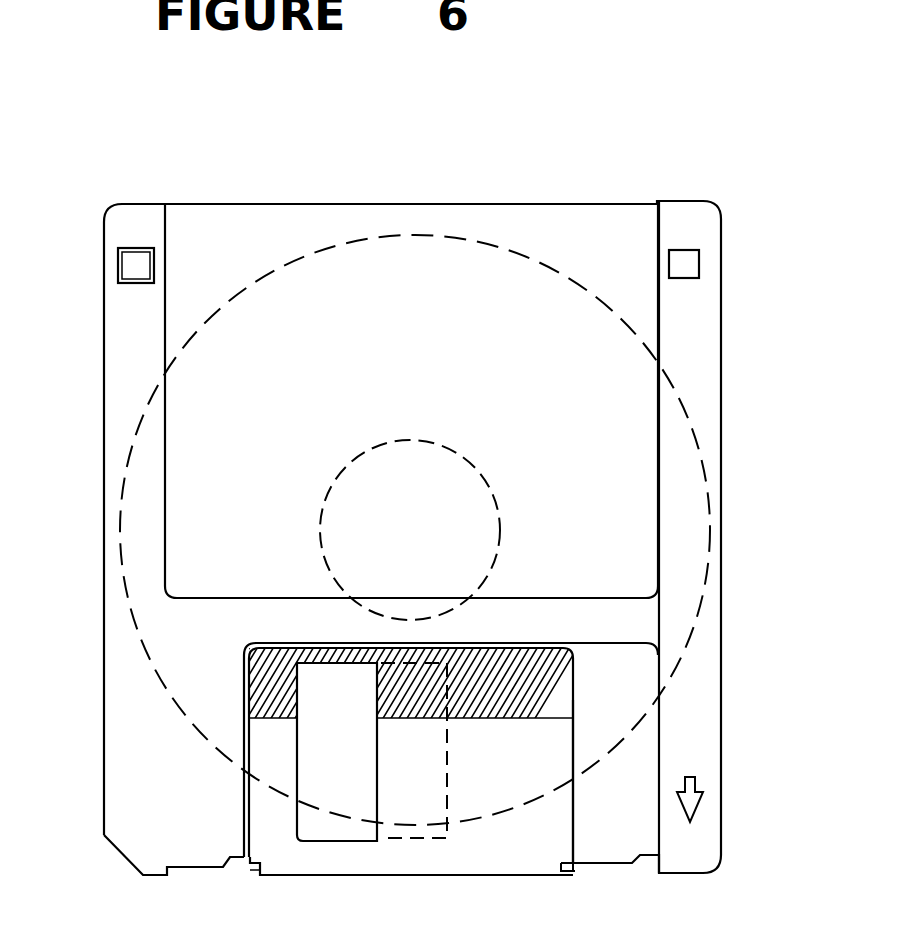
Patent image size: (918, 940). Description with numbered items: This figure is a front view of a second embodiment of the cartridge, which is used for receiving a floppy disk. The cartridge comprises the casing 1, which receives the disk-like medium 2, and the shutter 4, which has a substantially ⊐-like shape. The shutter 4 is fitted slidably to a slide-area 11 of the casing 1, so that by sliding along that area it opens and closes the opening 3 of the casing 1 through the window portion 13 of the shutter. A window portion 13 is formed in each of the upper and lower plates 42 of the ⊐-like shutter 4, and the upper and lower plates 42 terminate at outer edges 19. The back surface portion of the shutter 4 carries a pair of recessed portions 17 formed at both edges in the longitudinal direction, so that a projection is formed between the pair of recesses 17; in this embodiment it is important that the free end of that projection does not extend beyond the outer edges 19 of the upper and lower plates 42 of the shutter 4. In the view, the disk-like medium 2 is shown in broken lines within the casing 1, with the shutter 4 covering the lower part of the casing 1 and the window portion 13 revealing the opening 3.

The casing 1 is at (703, 387).
The disk-like medium 2 is at (530, 258).
The opening 3 is at (447, 800).
The shutter 4 is at (412, 858).
The slide-area 11 is at (655, 740).
The window portion 13 is at (300, 797).
The recessed portion 17 is at (577, 870).
The outer edge 19 is at (580, 757).
The upper and lower plates 42 is at (562, 647).